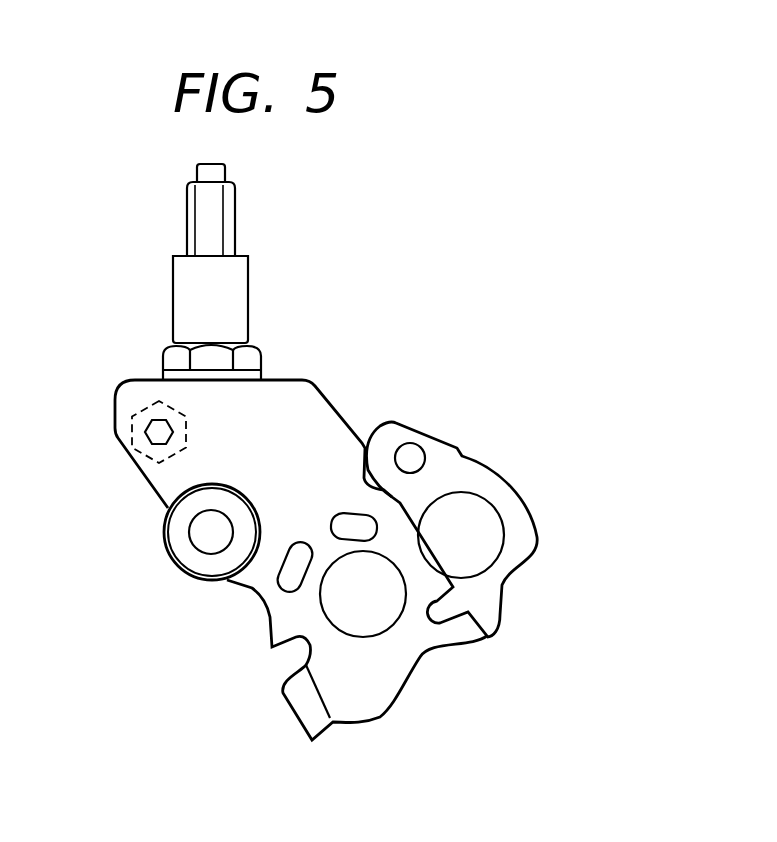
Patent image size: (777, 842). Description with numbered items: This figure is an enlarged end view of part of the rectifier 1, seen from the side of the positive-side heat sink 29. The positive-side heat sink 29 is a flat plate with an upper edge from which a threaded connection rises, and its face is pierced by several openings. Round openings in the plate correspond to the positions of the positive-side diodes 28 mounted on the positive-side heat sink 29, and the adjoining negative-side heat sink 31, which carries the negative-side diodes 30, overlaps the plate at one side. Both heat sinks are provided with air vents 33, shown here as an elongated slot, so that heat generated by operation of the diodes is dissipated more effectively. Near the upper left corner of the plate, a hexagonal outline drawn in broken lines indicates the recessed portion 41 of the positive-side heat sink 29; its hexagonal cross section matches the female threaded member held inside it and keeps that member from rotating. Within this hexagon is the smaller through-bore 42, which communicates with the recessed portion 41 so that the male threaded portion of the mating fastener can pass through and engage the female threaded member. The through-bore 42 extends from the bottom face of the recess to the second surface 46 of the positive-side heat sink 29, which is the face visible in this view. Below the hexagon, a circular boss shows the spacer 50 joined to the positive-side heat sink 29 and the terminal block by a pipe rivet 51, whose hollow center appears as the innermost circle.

The rectifier 1 is at (508, 312).
The positive-side diodes 28 is at (378, 618).
The positive-side heat sink 29 is at (305, 395).
The negative-side diodes 30 is at (488, 513).
The negative-side heat sink 31 is at (462, 468).
The air vents 33 is at (290, 580).
The recessed portion 41 is at (137, 425).
The through-bore 42 is at (153, 442).
The second surface 46 is at (135, 388).
The spacer 50 is at (165, 538).
The pipe rivet 51 is at (197, 562).